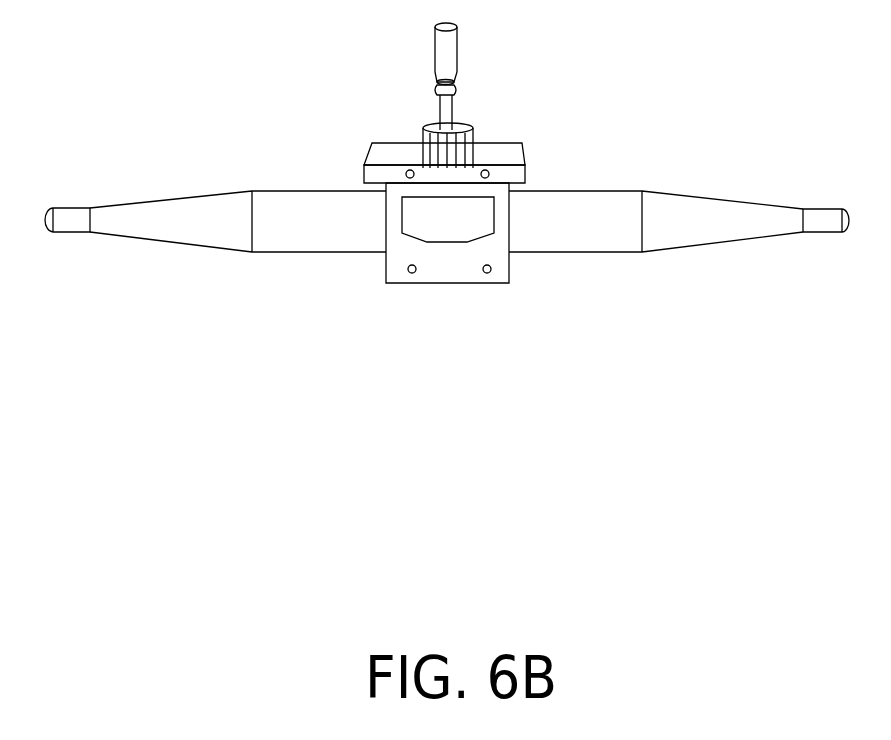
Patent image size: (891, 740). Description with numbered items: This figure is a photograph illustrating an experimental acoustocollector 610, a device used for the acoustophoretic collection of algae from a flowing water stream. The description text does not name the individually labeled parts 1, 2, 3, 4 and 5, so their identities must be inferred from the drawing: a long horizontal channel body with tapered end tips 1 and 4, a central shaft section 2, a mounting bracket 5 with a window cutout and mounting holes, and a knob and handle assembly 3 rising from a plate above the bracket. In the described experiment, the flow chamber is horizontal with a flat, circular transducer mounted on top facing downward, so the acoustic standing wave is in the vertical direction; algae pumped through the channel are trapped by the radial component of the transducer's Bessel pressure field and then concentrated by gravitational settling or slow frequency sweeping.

The left end tip 1 is at (78, 208).
The shaft body 2 is at (322, 232).
The handle knob 3 is at (470, 127).
The right end tip 4 is at (822, 220).
The mounting bracket 5 is at (441, 233).
The tool assembly 610 is at (205, 428).